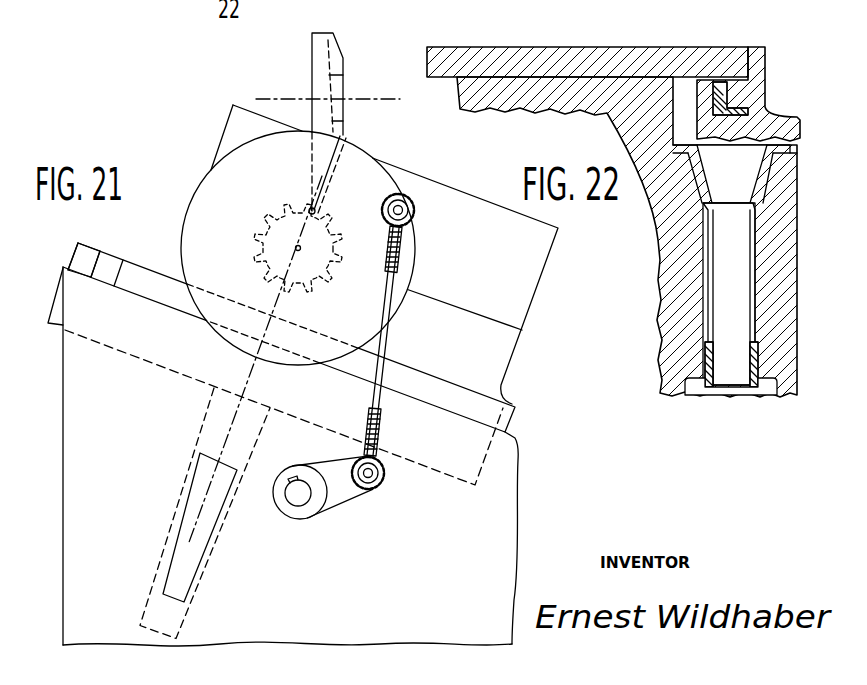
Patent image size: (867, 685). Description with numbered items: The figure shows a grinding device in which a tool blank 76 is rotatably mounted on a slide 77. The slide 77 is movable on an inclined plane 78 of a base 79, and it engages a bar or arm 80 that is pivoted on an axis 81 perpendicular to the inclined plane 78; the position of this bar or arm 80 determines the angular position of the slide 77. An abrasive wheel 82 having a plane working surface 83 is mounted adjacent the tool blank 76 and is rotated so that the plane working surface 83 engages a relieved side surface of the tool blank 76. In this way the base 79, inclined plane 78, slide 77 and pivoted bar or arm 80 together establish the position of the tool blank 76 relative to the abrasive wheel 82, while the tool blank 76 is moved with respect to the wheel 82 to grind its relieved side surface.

In FIG. 21, the tool blank 76 is at (283, 228).
In FIG. 21, the slide 77 is at (127, 273).
In FIG. 22, the slide 77 is at (610, 67).
In FIG. 21, the inclined plane 78 is at (97, 275).
In FIG. 21, the base 79 is at (72, 420).
In FIG. 22, the base 79 is at (502, 87).
In FIG. 21, the bar or arm 80 is at (78, 262).
In FIG. 22, the bar or arm 80 is at (763, 92).
In FIG. 21, the axis 81 is at (185, 548).
In FIG. 22, the axis 81 is at (729, 363).
In FIG. 21, the abrasive wheel 82 is at (328, 45).
In FIG. 21, the plane working surface 83 is at (310, 204).